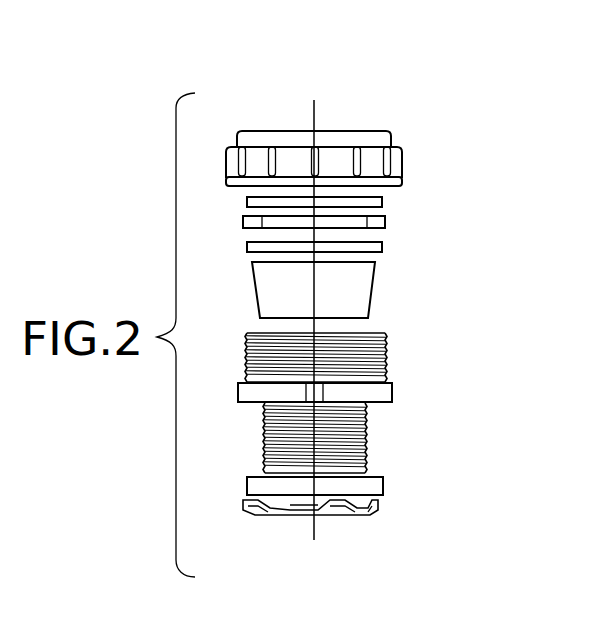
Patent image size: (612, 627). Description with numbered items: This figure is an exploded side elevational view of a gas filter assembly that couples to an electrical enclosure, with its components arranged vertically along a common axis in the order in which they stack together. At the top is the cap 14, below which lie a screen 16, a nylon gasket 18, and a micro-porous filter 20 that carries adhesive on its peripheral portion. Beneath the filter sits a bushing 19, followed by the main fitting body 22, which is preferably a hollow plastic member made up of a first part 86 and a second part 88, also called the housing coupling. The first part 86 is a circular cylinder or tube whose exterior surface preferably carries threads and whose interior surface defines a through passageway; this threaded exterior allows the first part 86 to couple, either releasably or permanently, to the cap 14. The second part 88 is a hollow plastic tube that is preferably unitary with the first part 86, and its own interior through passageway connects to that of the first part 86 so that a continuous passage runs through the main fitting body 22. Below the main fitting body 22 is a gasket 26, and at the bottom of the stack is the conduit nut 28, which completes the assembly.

The cap 14 is at (356, 118).
The screen 16 is at (393, 192).
The nylon gasket 18 is at (397, 217).
The micro-porous filter 20 is at (394, 239).
The bushing 19 is at (386, 285).
The first part 86 is at (401, 350).
The main fitting body 22 is at (406, 390).
The second part 88 is at (380, 444).
The gasket 26 is at (397, 483).
The conduit nut 28 is at (393, 513).